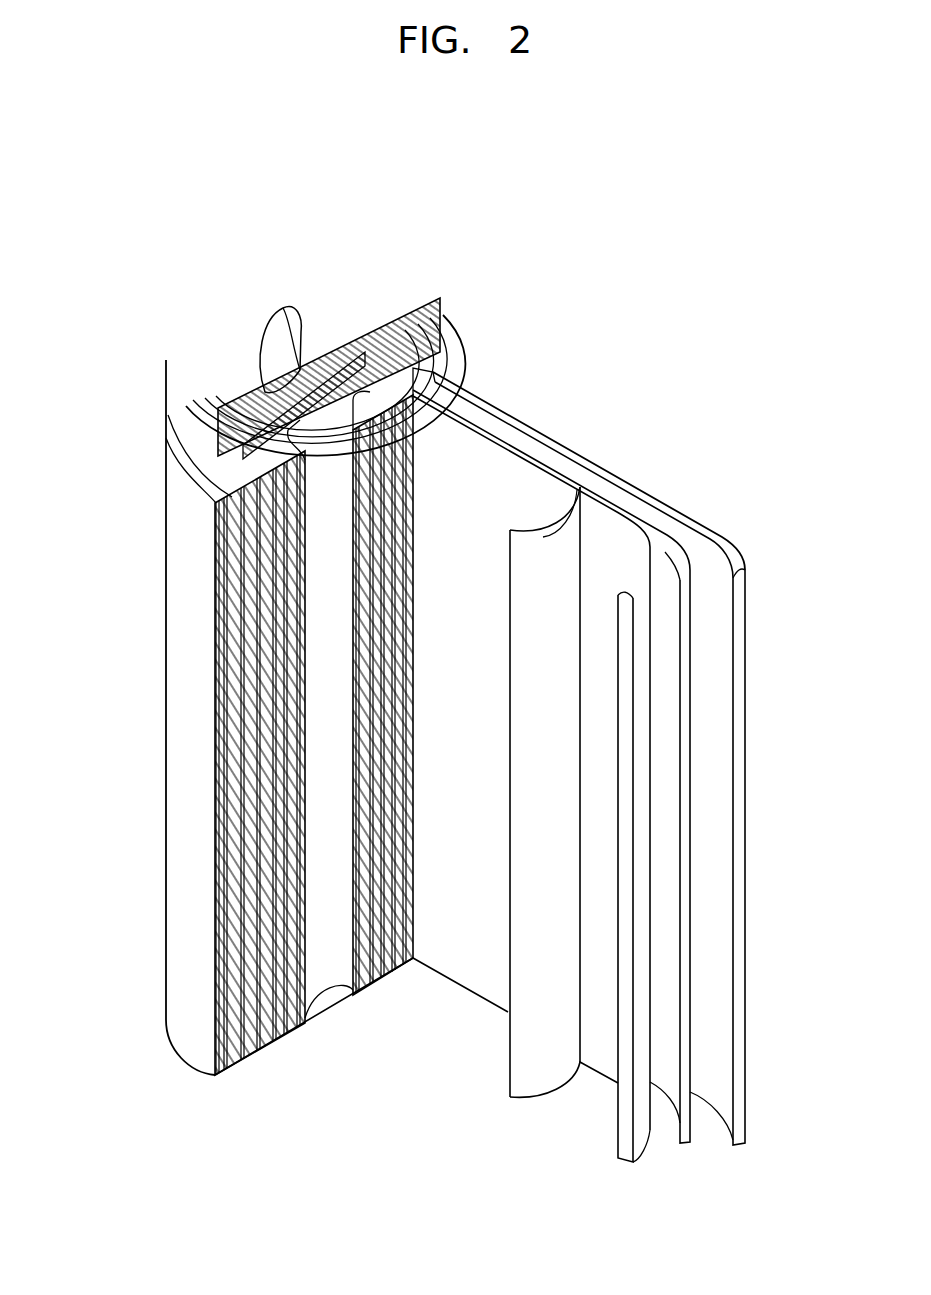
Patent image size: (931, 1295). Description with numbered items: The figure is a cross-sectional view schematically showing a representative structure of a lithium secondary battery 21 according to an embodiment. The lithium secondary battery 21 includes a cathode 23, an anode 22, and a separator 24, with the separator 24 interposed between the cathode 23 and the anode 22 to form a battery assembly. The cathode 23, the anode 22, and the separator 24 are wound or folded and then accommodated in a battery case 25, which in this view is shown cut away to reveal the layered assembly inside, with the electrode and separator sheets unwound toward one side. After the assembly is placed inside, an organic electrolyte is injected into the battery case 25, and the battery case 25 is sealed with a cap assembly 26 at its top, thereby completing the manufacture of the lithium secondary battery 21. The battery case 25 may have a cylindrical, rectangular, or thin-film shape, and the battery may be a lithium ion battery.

The lithium secondary battery 21 is at (633, 300).
The anode 22 is at (725, 557).
The cathode 23 is at (607, 507).
The separator 24 is at (543, 537).
The battery case 25 is at (180, 723).
The cap assembly 26 is at (300, 320).